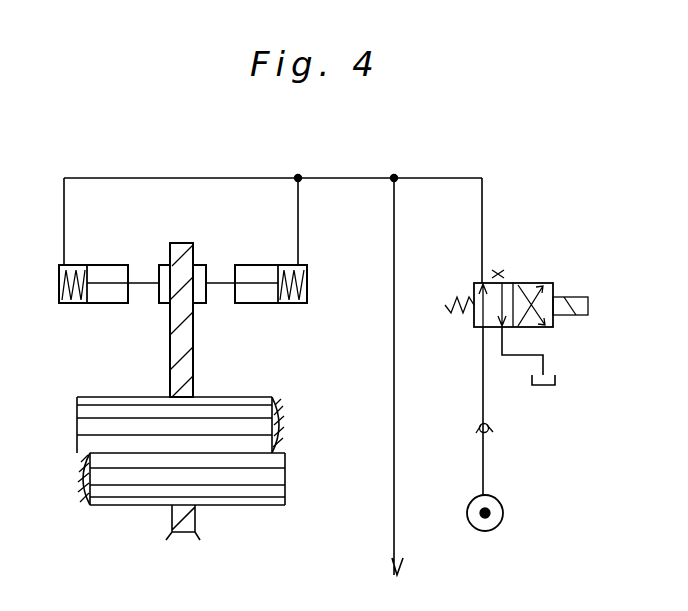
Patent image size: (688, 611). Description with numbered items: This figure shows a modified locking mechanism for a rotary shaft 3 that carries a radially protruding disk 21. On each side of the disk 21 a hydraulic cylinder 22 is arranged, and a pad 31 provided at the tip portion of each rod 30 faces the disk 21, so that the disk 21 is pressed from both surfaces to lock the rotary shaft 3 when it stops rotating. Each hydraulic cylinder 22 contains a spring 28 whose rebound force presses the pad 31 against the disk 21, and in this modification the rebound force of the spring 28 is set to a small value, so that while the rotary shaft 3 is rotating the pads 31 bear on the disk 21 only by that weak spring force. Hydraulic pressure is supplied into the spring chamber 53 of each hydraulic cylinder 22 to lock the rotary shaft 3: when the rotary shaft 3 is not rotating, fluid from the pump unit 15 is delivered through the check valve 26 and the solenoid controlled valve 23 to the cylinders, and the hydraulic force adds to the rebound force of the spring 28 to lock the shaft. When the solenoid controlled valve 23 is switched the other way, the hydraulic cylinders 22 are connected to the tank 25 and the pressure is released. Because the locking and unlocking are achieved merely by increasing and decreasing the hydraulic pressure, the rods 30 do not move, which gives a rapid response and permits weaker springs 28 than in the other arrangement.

The rotary shaft 3 is at (122, 497).
The pump unit 15 is at (503, 512).
The disk 21 is at (175, 357).
The hydraulic cylinder 22 is at (91, 316).
The solenoid controlled valve 23 is at (522, 277).
The tank 25 is at (555, 378).
The check valve 26 is at (490, 432).
The spring 28 is at (63, 304).
The rod 30 is at (140, 278).
The pad 31 is at (162, 293).
The spring chamber 53 is at (70, 265).